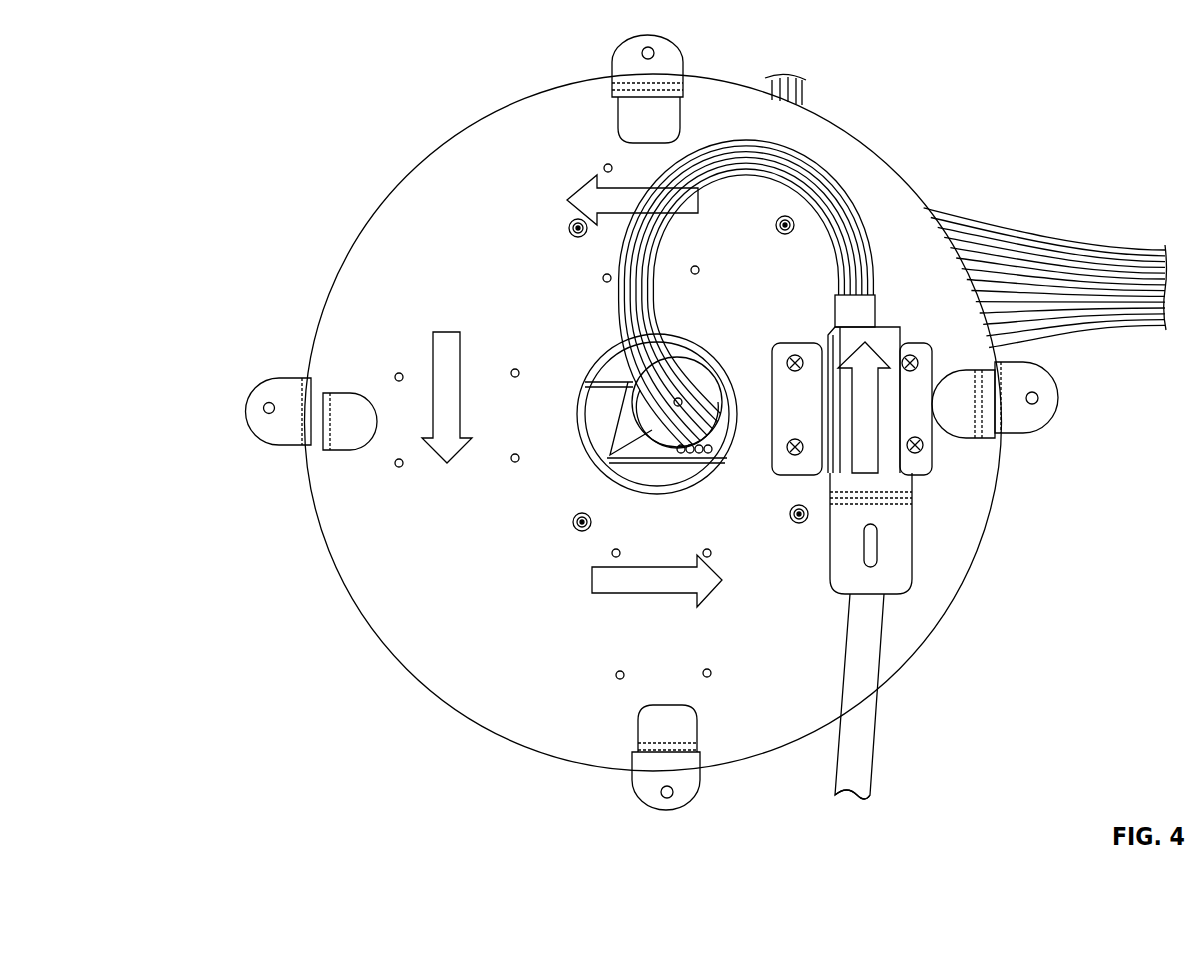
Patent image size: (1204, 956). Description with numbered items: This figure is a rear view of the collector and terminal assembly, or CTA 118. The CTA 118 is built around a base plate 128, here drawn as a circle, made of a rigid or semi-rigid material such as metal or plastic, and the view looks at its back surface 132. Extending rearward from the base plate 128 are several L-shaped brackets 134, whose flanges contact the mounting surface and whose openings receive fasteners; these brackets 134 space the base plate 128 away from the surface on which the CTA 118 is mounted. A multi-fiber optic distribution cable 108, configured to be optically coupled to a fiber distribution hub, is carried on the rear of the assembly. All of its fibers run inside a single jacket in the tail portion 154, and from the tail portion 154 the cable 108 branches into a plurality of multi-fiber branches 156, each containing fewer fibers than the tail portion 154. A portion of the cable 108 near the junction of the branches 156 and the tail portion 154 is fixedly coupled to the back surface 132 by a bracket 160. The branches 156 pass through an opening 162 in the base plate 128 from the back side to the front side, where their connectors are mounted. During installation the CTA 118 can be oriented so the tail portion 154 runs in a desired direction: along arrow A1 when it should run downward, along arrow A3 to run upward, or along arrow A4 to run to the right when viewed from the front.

The collector and terminal assembly (CTA) 118 is at (256, 80).
The base plate 128 is at (412, 620).
The back surface 132 is at (425, 223).
The brackets 134 is at (635, 127).
The opening 162 is at (614, 416).
The multi-fiber branches 156 is at (815, 188).
The bracket 160 is at (890, 428).
The tail portion 154 is at (865, 652).
The multi-fiber optic distribution cable 108 is at (883, 764).
The arrow A1 is at (880, 465).
The arrow A3 is at (432, 372).
The arrow A4 is at (607, 190).